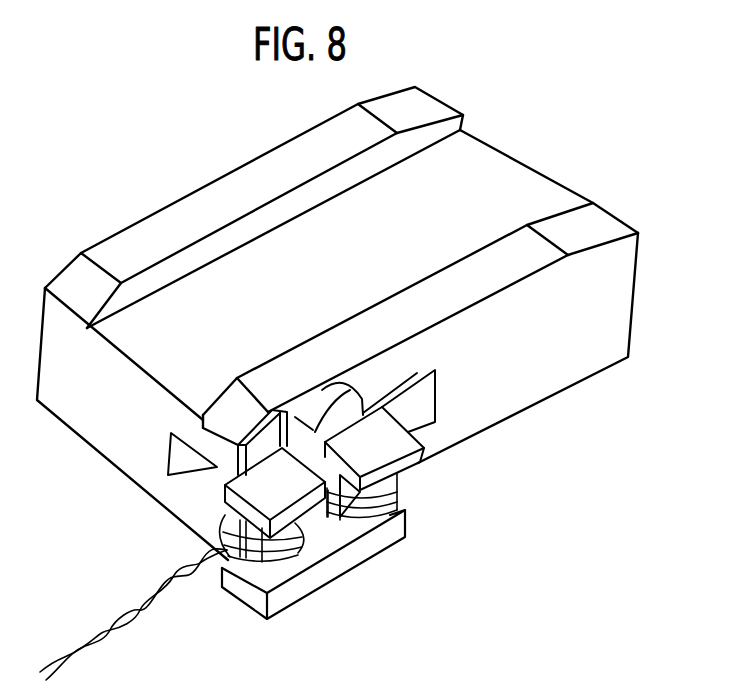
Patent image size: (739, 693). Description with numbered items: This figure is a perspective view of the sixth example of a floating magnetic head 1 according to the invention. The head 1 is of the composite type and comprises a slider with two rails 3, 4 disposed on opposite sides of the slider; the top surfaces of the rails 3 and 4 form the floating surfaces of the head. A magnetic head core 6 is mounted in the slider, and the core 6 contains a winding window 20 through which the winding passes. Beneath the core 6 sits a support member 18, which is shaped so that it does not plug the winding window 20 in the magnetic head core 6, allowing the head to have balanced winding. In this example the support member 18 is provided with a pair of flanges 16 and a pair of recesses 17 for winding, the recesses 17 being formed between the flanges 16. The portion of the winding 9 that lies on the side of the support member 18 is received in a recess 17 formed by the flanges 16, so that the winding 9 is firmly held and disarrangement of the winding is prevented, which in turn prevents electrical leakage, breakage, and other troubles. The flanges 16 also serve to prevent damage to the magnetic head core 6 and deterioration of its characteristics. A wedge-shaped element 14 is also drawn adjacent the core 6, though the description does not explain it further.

The floating magnetic head 1 is at (505, 182).
The rail 3 is at (515, 268).
The rail 4 is at (228, 203).
The magnetic head core 6 is at (327, 405).
The winding 9 is at (140, 610).
The wedge plate 14 is at (238, 458).
The flange 16 is at (338, 563).
The recess 17 is at (280, 545).
The support member 18 is at (252, 616).
The winding window 20 is at (360, 387).